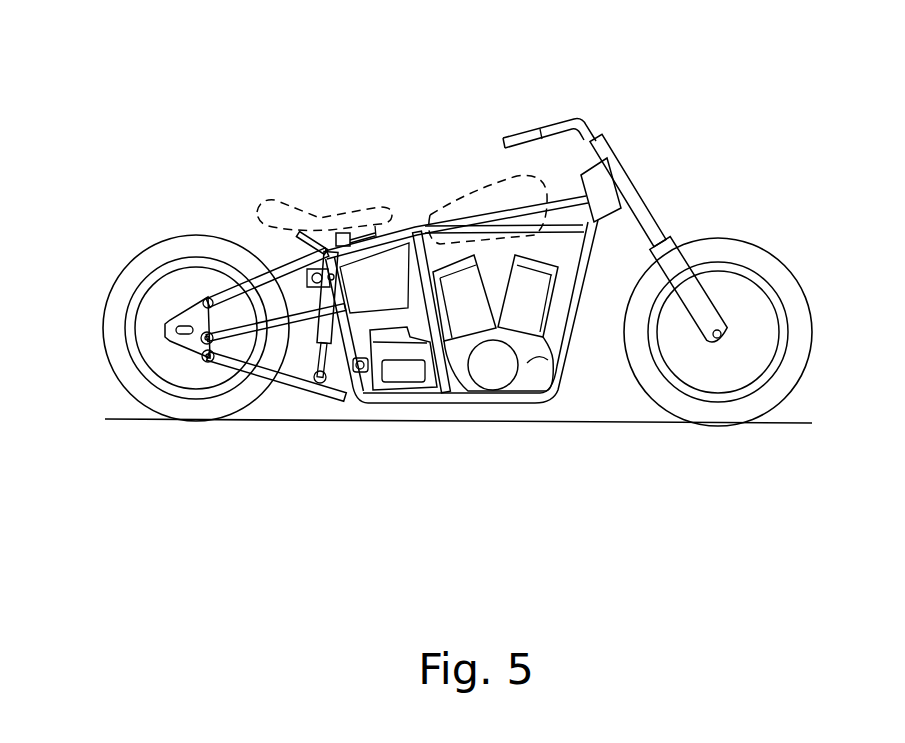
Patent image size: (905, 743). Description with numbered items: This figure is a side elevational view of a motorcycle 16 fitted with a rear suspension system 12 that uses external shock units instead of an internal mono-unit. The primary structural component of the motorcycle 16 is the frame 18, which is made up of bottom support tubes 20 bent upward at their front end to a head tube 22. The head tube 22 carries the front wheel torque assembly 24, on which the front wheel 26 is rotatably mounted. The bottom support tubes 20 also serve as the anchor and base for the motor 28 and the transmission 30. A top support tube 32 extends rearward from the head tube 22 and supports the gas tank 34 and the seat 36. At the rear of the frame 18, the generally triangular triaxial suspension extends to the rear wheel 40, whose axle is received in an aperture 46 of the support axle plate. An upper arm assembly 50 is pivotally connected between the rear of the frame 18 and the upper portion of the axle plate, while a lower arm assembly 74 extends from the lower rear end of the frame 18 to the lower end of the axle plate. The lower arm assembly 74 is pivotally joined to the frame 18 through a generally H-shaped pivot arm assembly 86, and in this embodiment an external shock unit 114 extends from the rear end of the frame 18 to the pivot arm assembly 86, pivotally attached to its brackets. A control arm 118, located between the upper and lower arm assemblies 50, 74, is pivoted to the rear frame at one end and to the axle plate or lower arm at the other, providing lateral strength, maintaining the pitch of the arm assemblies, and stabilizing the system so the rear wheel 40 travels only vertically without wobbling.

The rear suspension system 12 is at (276, 408).
The motorcycle 16 is at (368, 138).
The frame 18 is at (466, 412).
The bottom support tubes 20 is at (543, 397).
The head tube 22 is at (596, 188).
The front wheel torque assembly 24 is at (641, 218).
The front wheel 26 is at (785, 273).
The motor 28 is at (547, 366).
The transmission 30 is at (413, 376).
The top support tube 32 is at (412, 228).
The gas tank 34 is at (488, 185).
The seat 36 is at (322, 220).
The rear wheel 40 is at (113, 350).
The aperture 46 is at (183, 315).
The upper arm assembly 50 is at (278, 273).
The lower arm assembly 74 is at (230, 363).
The pivot arm assembly 86 is at (316, 398).
The external shock unit 114 is at (340, 412).
The control arm 118 is at (213, 366).